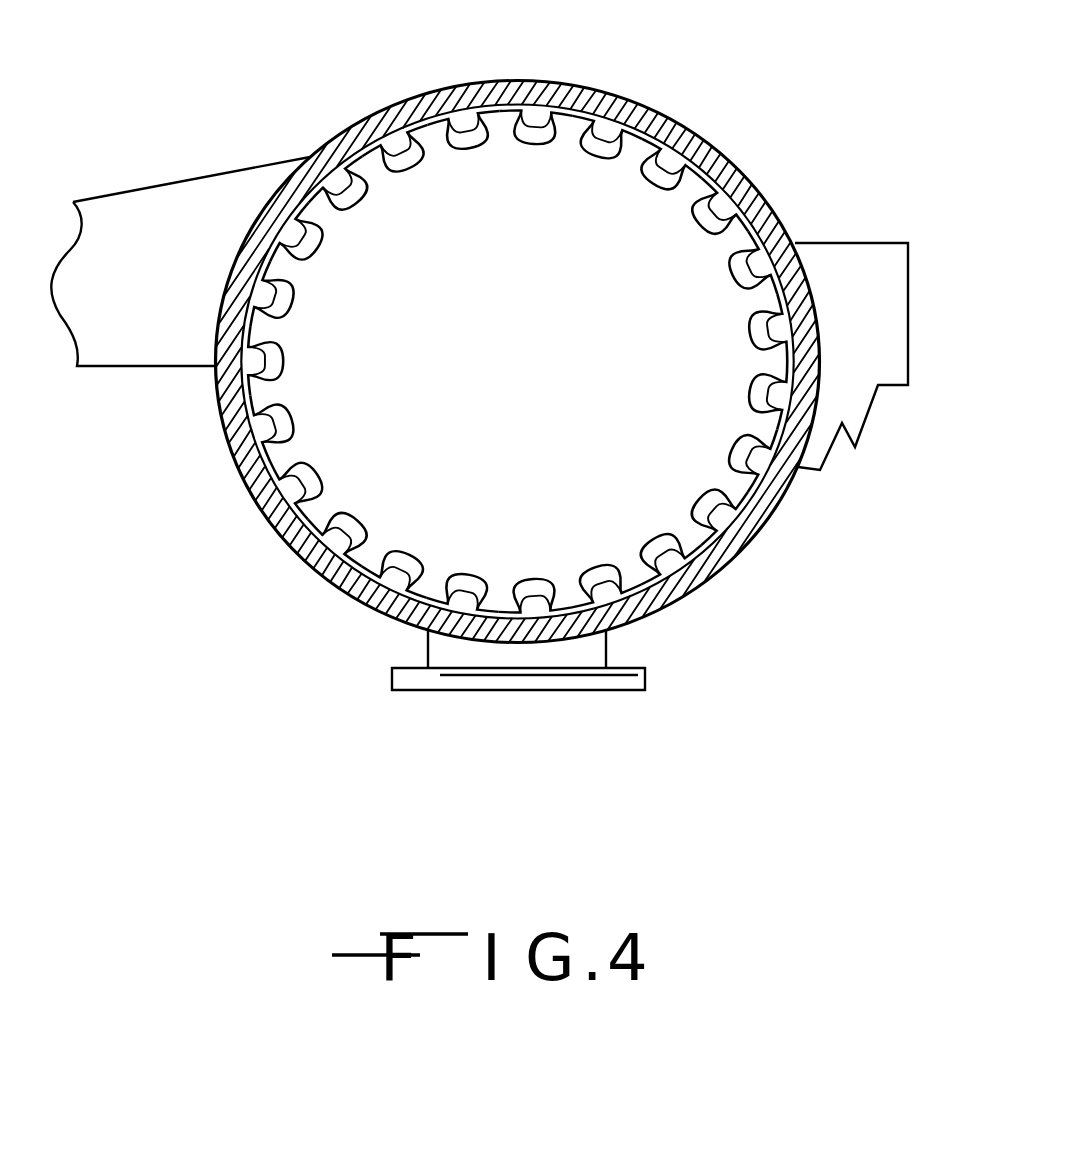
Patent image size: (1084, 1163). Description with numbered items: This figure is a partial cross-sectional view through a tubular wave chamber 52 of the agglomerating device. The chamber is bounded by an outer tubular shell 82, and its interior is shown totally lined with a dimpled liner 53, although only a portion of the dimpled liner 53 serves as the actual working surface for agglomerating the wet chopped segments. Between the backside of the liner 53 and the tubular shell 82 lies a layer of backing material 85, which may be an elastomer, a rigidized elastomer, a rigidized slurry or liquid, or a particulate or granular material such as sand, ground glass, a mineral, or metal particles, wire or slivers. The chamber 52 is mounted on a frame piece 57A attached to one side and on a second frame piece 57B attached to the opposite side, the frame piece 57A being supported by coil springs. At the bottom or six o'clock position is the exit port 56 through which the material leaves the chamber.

The wave chamber 52 is at (680, 108).
The dimpled liner 53 is at (727, 175).
The exit port 56 is at (647, 673).
The frame piece 57A is at (194, 220).
The second frame piece 57B is at (835, 258).
The tubular shell 82 is at (782, 490).
The backing material 85 is at (620, 97).